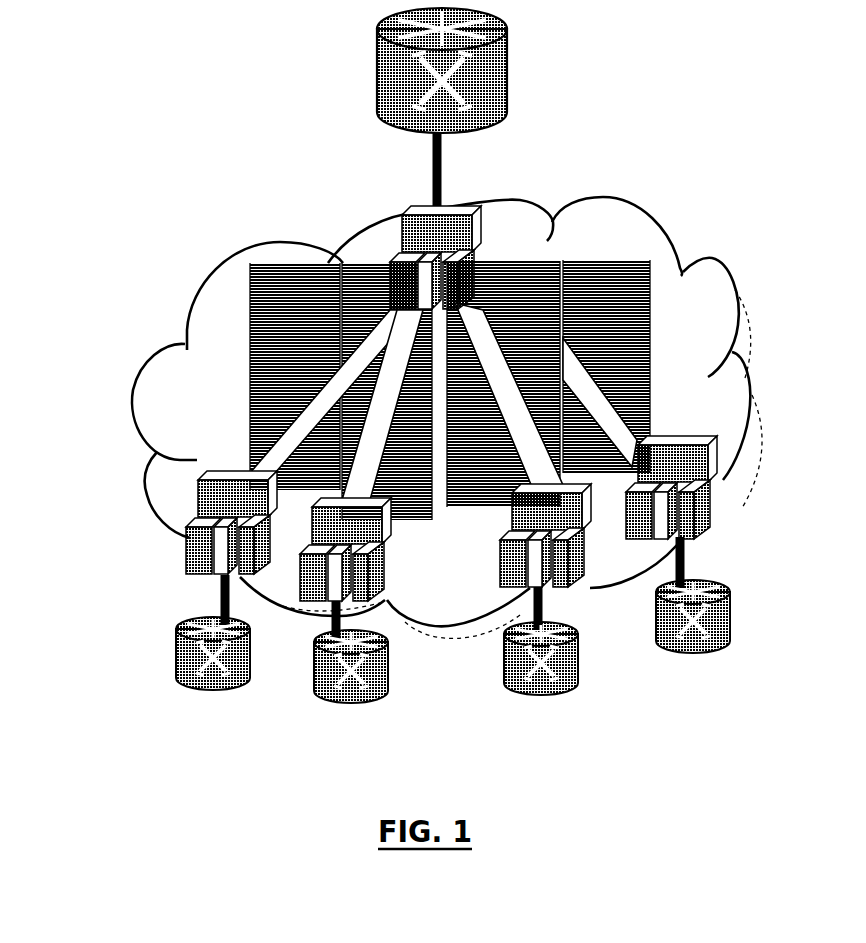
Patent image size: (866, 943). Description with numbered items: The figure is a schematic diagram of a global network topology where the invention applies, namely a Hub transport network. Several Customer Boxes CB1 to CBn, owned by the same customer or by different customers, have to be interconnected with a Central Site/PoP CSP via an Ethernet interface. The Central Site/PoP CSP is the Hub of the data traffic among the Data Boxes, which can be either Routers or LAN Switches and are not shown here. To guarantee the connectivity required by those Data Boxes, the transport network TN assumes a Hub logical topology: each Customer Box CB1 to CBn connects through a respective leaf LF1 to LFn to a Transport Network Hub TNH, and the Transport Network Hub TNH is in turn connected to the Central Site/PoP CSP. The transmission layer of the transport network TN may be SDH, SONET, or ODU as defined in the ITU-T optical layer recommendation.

The Central Site/PoP CSP is at (392, 78).
The Transport Network Hub TNH is at (405, 221).
The transport network TN is at (700, 270).
The leaf LF1 is at (195, 563).
The leaf LFn is at (703, 507).
The Customer Box CB1 is at (190, 657).
The Customer Box CBn is at (720, 622).